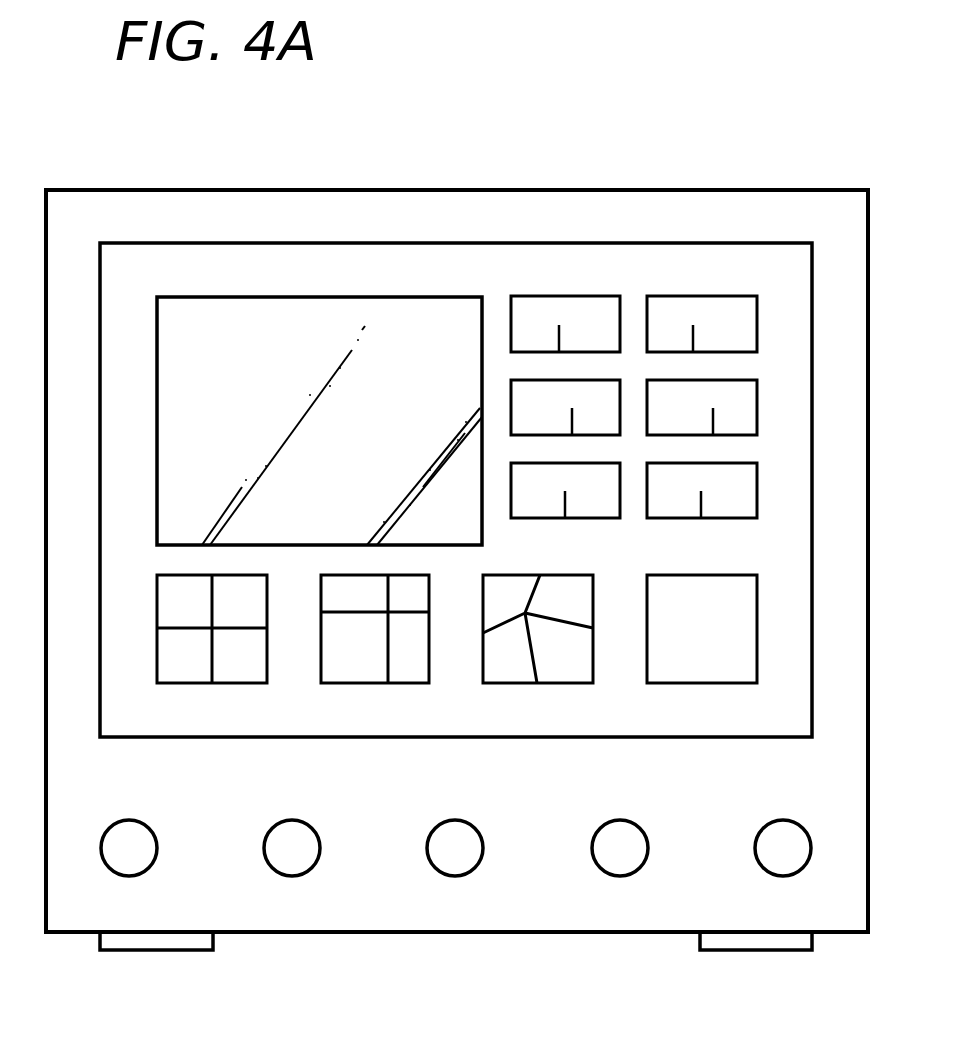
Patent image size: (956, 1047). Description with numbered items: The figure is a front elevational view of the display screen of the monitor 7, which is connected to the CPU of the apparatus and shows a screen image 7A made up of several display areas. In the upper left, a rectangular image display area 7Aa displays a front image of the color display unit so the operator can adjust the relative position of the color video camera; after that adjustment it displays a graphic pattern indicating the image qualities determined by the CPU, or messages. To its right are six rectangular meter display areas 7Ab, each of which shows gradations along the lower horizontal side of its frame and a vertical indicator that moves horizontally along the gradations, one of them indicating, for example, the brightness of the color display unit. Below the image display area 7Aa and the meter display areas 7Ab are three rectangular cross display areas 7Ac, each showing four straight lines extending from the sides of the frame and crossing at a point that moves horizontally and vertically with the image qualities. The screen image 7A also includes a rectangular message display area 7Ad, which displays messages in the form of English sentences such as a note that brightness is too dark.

The monitor 7 is at (110, 190).
The screen image 7A is at (776, 262).
The image display area 7Aa is at (274, 326).
The meter display areas 7Ab is at (662, 310).
The cross display areas 7Ac is at (513, 657).
The message display area 7Ad is at (693, 657).